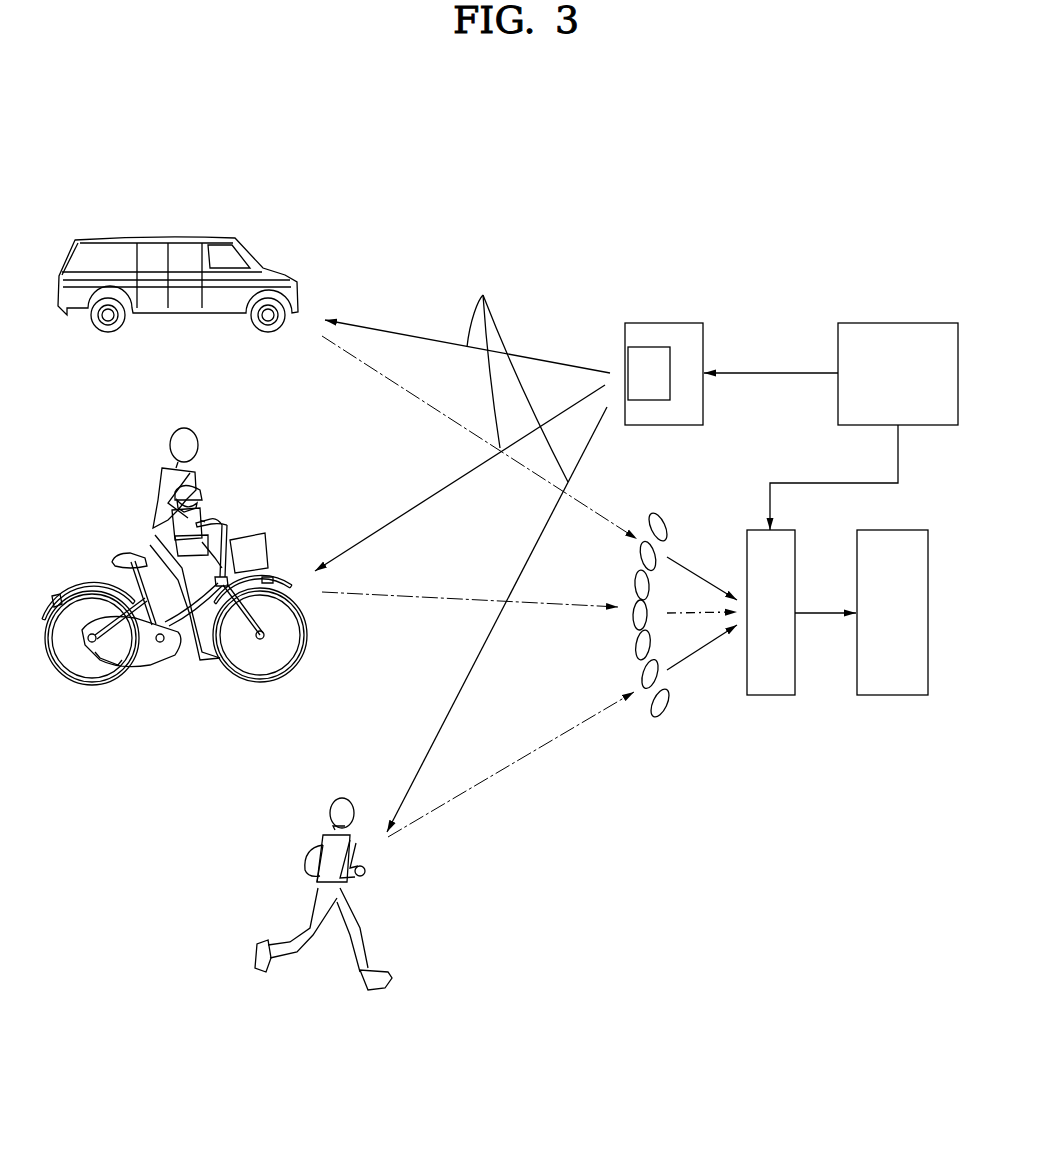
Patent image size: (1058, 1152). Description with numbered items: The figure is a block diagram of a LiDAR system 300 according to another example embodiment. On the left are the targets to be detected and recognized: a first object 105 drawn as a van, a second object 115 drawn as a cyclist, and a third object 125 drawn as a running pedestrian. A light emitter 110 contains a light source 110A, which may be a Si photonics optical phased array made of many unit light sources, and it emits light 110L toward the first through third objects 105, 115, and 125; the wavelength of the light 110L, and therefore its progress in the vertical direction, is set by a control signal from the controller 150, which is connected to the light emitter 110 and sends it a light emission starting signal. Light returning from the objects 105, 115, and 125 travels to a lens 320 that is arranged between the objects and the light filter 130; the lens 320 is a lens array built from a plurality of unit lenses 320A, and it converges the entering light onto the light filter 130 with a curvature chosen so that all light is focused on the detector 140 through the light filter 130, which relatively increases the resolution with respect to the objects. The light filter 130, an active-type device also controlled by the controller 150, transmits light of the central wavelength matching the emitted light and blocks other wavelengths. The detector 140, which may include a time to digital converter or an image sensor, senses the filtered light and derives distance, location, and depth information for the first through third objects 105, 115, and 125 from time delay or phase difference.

The LiDAR system 300 is at (830, 160).
The first object 105 is at (131, 218).
The second object 115 is at (118, 480).
The third object 125 is at (295, 838).
The light emitter 110 is at (662, 327).
The light source 110A is at (646, 355).
The light 110L is at (513, 373).
The controller 150 is at (899, 328).
The lens 320 is at (683, 612).
The unit lens 320A is at (660, 712).
The light filter 130 is at (765, 695).
The detector 140 is at (895, 695).